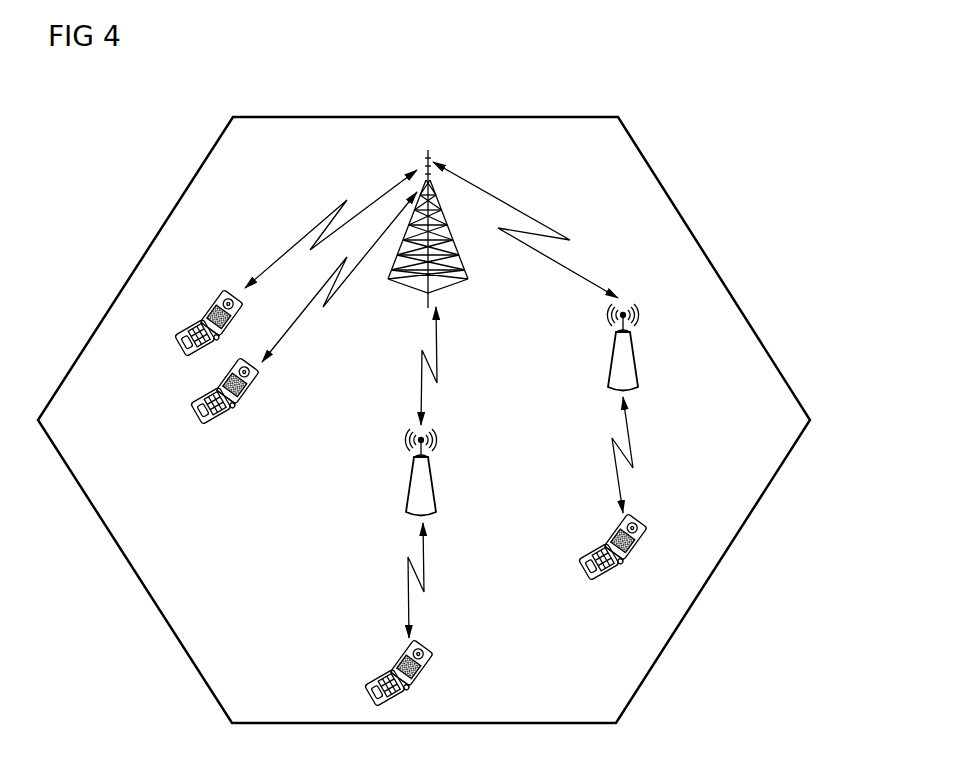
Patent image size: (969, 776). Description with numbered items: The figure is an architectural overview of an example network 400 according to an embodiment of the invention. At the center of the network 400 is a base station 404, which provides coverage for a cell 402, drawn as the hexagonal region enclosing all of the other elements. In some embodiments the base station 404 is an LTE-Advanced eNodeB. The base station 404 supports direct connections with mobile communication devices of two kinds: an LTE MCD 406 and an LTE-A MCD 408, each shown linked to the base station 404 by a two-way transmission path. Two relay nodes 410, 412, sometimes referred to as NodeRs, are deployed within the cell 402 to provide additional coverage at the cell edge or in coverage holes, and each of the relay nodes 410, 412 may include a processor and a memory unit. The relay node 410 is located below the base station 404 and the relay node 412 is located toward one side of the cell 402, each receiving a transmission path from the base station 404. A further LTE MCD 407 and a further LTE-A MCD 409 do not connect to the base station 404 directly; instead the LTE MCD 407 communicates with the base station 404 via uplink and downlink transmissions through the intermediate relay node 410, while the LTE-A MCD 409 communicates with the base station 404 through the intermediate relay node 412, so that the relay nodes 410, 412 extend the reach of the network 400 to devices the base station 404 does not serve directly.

The network 400 is at (612, 80).
The cell 402 is at (483, 116).
The base station 404 is at (431, 160).
The LTE MCD 406 is at (200, 323).
The LTE MCD 407 is at (390, 672).
The LTE-A MCD 408 is at (215, 420).
The LTE-A MCD 409 is at (607, 568).
The relay node 410 is at (408, 480).
The relay node 412 is at (637, 358).